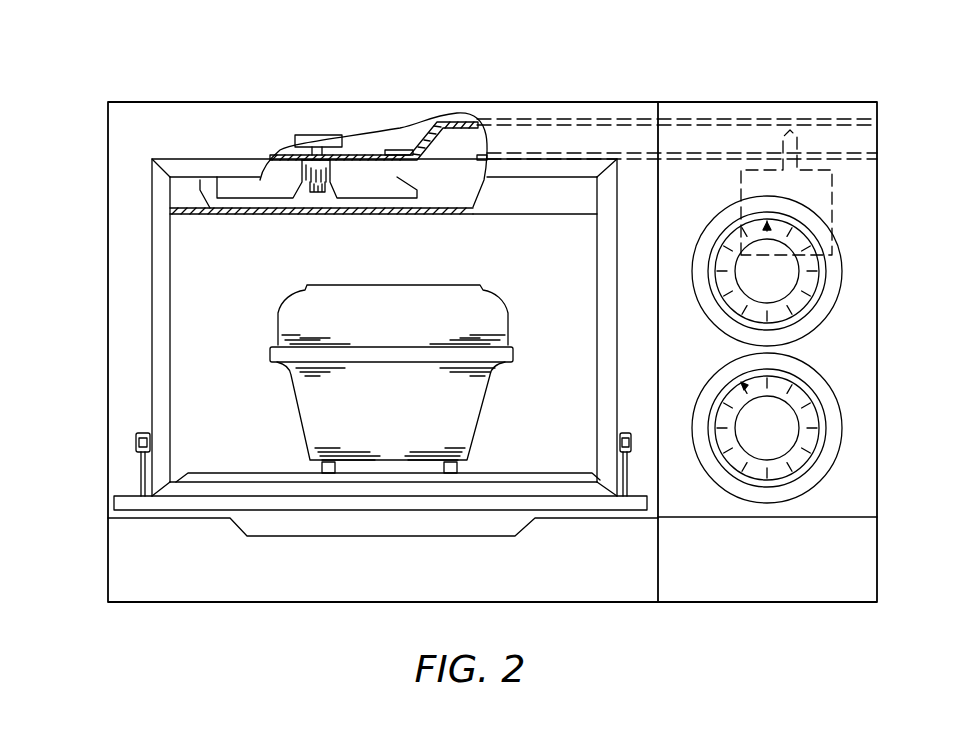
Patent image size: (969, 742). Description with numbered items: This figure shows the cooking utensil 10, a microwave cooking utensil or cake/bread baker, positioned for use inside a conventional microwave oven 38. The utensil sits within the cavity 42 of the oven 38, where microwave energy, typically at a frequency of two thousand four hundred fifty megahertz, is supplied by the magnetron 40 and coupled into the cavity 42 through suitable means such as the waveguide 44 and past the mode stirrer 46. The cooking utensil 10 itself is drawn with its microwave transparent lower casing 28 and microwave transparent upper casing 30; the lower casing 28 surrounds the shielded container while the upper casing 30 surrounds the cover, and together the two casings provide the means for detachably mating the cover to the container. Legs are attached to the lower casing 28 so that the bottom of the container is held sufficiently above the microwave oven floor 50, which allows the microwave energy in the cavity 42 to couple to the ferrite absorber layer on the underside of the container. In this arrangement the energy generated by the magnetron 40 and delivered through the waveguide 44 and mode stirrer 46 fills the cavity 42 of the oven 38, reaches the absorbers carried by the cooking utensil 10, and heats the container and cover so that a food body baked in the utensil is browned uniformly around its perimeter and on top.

The cooking utensil 10 is at (398, 353).
The lower casing 28 is at (323, 407).
The upper casing 30 is at (300, 313).
The microwave oven 38 is at (600, 81).
The magnetron 40 is at (833, 202).
The cavity 42 is at (200, 325).
The waveguide 44 is at (711, 135).
The mode stirrer 46 is at (406, 178).
The microwave oven floor 50 is at (496, 470).